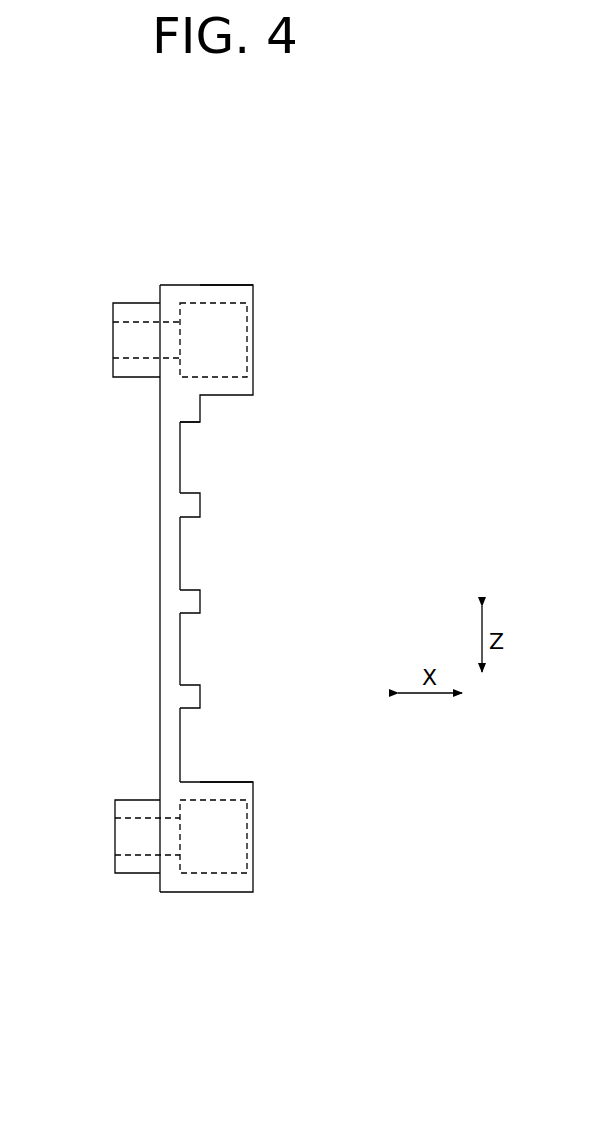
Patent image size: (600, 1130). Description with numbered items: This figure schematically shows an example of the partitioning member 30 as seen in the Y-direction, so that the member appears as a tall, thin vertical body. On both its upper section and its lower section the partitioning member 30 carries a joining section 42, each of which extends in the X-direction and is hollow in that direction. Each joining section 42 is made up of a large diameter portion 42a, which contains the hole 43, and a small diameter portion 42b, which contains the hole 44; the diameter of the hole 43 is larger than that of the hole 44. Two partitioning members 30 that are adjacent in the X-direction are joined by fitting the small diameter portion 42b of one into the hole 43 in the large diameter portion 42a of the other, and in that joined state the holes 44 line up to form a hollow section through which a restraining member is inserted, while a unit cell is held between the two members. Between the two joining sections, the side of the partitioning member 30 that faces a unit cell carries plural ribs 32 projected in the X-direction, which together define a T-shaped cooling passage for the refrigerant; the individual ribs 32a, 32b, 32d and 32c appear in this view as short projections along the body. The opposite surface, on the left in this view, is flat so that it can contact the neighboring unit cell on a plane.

The partitioning member 30 is at (145, 207).
The joining section 42 is at (207, 283).
The large diameter portion 42a is at (230, 285).
The small diameter portion 42b is at (128, 303).
The hole 43 is at (230, 304).
The hole 44 is at (130, 322).
The ribs 32 is at (254, 595).
The rib 32a is at (200, 412).
The rib 32b is at (200, 505).
The rib 32d is at (200, 601).
The rib 32c is at (228, 697).